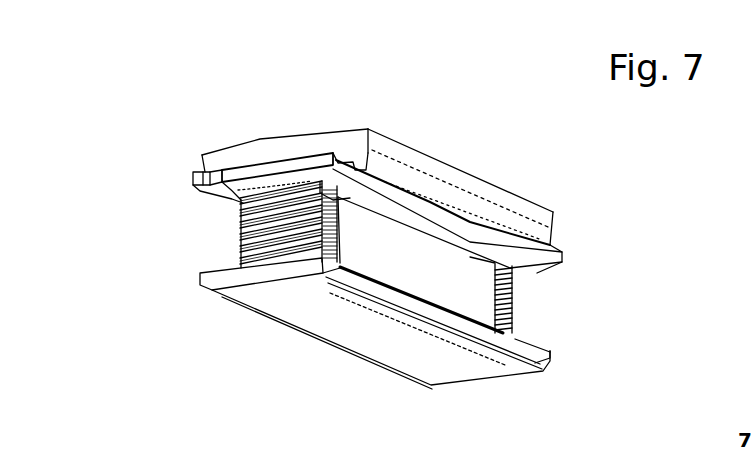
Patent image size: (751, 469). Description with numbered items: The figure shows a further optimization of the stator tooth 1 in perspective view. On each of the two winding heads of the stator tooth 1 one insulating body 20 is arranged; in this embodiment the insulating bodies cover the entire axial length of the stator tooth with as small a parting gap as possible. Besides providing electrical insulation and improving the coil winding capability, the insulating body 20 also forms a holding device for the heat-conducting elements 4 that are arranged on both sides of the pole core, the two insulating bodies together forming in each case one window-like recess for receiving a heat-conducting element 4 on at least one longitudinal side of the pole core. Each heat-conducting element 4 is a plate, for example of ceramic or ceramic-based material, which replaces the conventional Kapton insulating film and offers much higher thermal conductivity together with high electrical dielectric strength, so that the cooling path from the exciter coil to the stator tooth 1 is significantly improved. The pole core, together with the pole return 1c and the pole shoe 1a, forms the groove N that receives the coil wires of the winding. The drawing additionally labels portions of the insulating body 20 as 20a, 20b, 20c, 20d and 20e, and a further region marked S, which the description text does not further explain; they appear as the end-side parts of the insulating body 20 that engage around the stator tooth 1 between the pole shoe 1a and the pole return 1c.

The stator tooth 1 is at (232, 150).
The pole shoe 1a is at (393, 140).
The pole return 1c is at (392, 343).
The heat-conducting element 4 is at (414, 258).
The insulating body 20 is at (495, 243).
The screw shank 20a is at (252, 239).
The screw tabs 20b is at (288, 158).
The lower screw block 20c is at (207, 292).
The screw collar 20d is at (513, 295).
The screw thread end 20e is at (503, 283).
The screw head S is at (260, 142).
The groove N is at (528, 327).